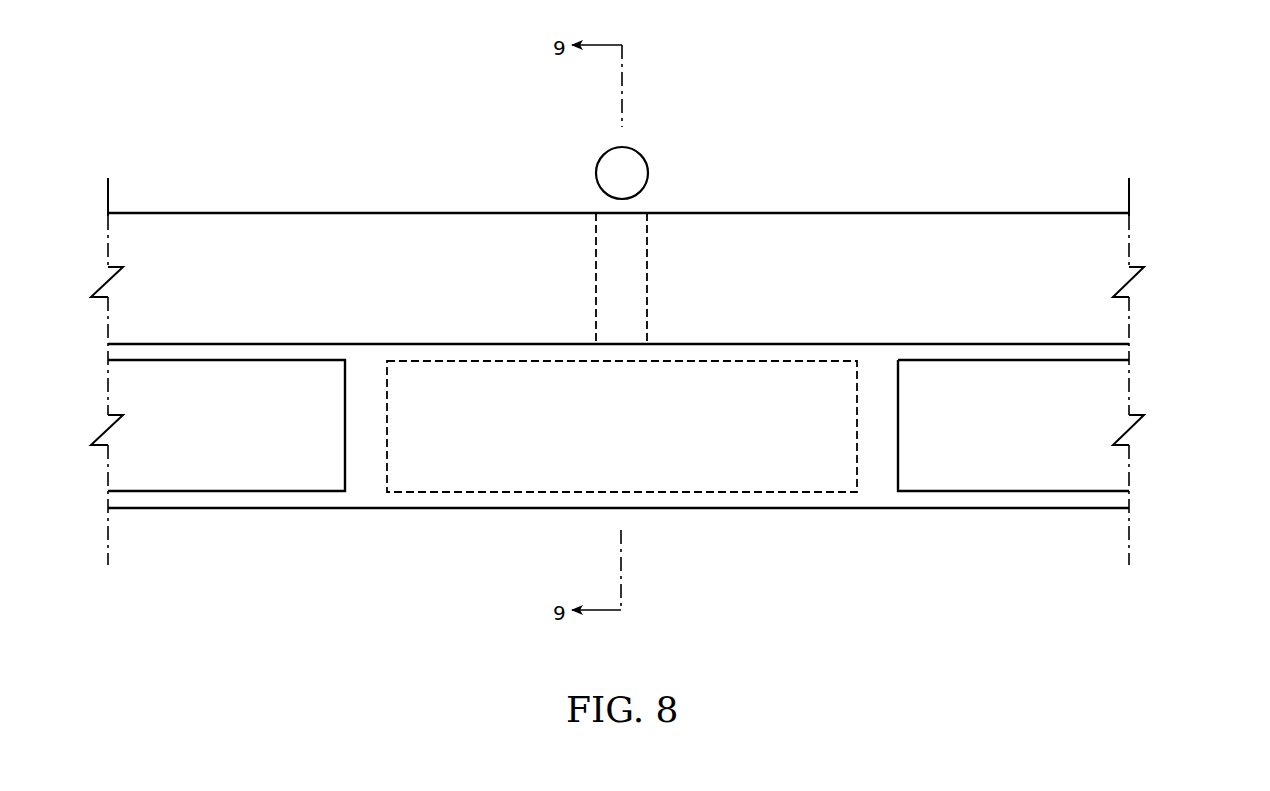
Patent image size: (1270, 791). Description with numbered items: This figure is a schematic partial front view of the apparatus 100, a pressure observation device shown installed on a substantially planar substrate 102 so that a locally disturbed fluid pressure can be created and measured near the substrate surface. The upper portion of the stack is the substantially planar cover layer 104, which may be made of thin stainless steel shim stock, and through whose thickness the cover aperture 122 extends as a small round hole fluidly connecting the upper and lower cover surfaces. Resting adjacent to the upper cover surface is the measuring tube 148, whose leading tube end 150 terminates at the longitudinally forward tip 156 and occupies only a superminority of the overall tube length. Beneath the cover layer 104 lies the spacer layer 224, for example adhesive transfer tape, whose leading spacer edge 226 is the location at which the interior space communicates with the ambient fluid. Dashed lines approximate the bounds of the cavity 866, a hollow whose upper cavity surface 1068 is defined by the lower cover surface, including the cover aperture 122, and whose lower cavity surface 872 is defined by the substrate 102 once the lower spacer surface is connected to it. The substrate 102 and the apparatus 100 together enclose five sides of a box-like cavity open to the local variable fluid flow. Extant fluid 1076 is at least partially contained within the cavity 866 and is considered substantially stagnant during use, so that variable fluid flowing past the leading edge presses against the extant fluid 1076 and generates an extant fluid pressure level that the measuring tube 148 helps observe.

The apparatus 100 is at (1072, 131).
The substrate 102 is at (1010, 510).
The cover layer 104 is at (1147, 315).
The cover aperture 122 is at (647, 278).
The measuring tube 148 is at (675, 173).
The leading tube end 150 is at (553, 143).
The longitudinally forward tip 156 is at (611, 160).
The spacer layer 224 is at (1147, 385).
The leading spacer edge 226 is at (223, 473).
The cavity 866 is at (501, 452).
The lower cavity surface 872 is at (738, 493).
The upper cavity surface 1068 is at (567, 362).
The extant fluid 1076 is at (622, 426).